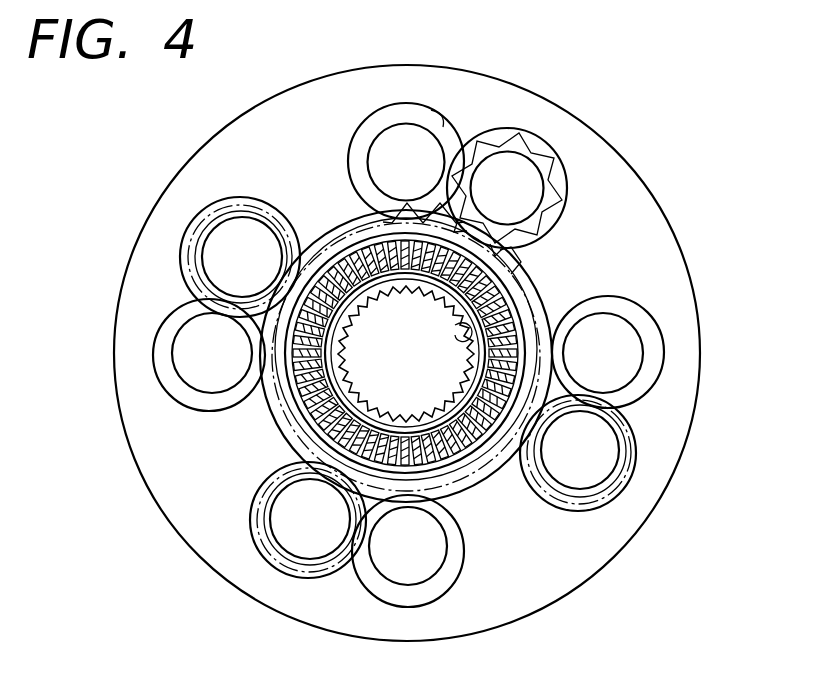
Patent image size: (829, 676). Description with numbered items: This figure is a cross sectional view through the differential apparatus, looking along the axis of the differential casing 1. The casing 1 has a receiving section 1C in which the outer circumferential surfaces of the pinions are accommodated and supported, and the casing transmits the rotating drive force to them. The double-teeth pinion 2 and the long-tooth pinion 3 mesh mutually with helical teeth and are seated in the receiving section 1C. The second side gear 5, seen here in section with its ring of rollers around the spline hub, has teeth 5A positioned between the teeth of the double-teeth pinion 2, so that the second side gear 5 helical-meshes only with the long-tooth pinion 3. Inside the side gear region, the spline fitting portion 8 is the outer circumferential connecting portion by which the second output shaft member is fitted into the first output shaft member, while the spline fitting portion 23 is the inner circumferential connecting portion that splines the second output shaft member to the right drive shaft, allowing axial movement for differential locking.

The differential casing 1 is at (665, 283).
The receiving section 1C is at (453, 123).
The double-teeth pinion 2 is at (525, 183).
The long-tooth pinion 3 is at (405, 137).
The second side gear 5 is at (525, 328).
The teeth 5A is at (373, 213).
The spline fitting portion 8 is at (520, 373).
The spline fitting portion 23 is at (455, 340).